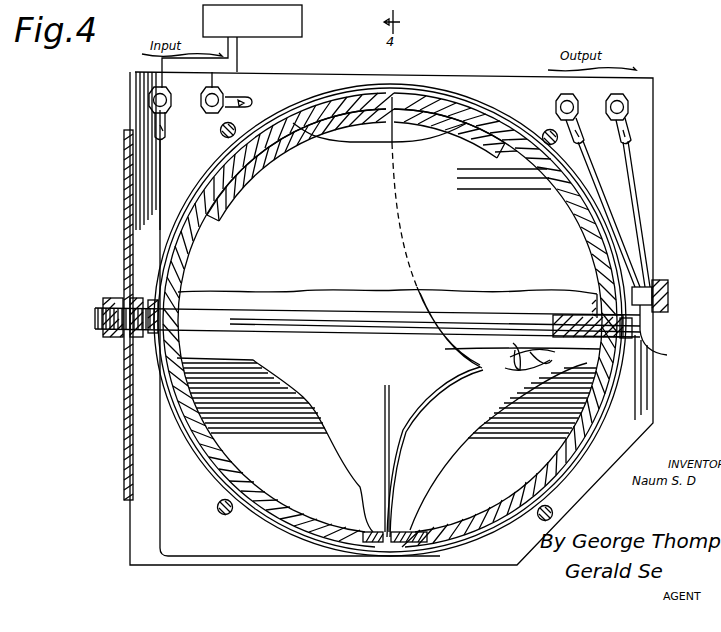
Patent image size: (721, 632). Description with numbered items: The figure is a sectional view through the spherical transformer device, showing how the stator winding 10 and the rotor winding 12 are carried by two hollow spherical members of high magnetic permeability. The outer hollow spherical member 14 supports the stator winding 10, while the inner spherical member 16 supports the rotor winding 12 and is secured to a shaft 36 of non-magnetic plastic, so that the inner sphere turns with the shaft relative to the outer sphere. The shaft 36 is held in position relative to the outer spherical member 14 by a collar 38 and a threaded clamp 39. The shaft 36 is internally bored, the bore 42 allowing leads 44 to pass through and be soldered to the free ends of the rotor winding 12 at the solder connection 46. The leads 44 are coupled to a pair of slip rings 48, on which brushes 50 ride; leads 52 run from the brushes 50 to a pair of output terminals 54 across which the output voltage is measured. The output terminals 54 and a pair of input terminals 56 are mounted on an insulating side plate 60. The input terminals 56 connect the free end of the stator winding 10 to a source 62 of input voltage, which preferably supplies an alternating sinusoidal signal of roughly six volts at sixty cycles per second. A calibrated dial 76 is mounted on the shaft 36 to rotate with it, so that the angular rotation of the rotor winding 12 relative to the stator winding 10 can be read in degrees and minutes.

The stator winding 10 is at (169, 428).
The rotor winding 12 is at (525, 432).
The hollow spherical member 14 is at (191, 176).
The inner spherical member 16 is at (285, 181).
The shaft 36 is at (360, 308).
The collar 38 is at (155, 338).
The threaded clamp 39 is at (124, 334).
The bore 42 is at (595, 302).
The leads 44 is at (558, 362).
The solder connection 46 is at (516, 354).
The slip rings 48 is at (667, 355).
The brushes 50 is at (668, 318).
The leads 52 is at (637, 203).
The output terminals 54 is at (553, 101).
The input terminals 56 is at (148, 97).
The side plate 60 is at (466, 86).
The source of input voltage 62 is at (302, 30).
The calibrated dial 76 is at (125, 196).